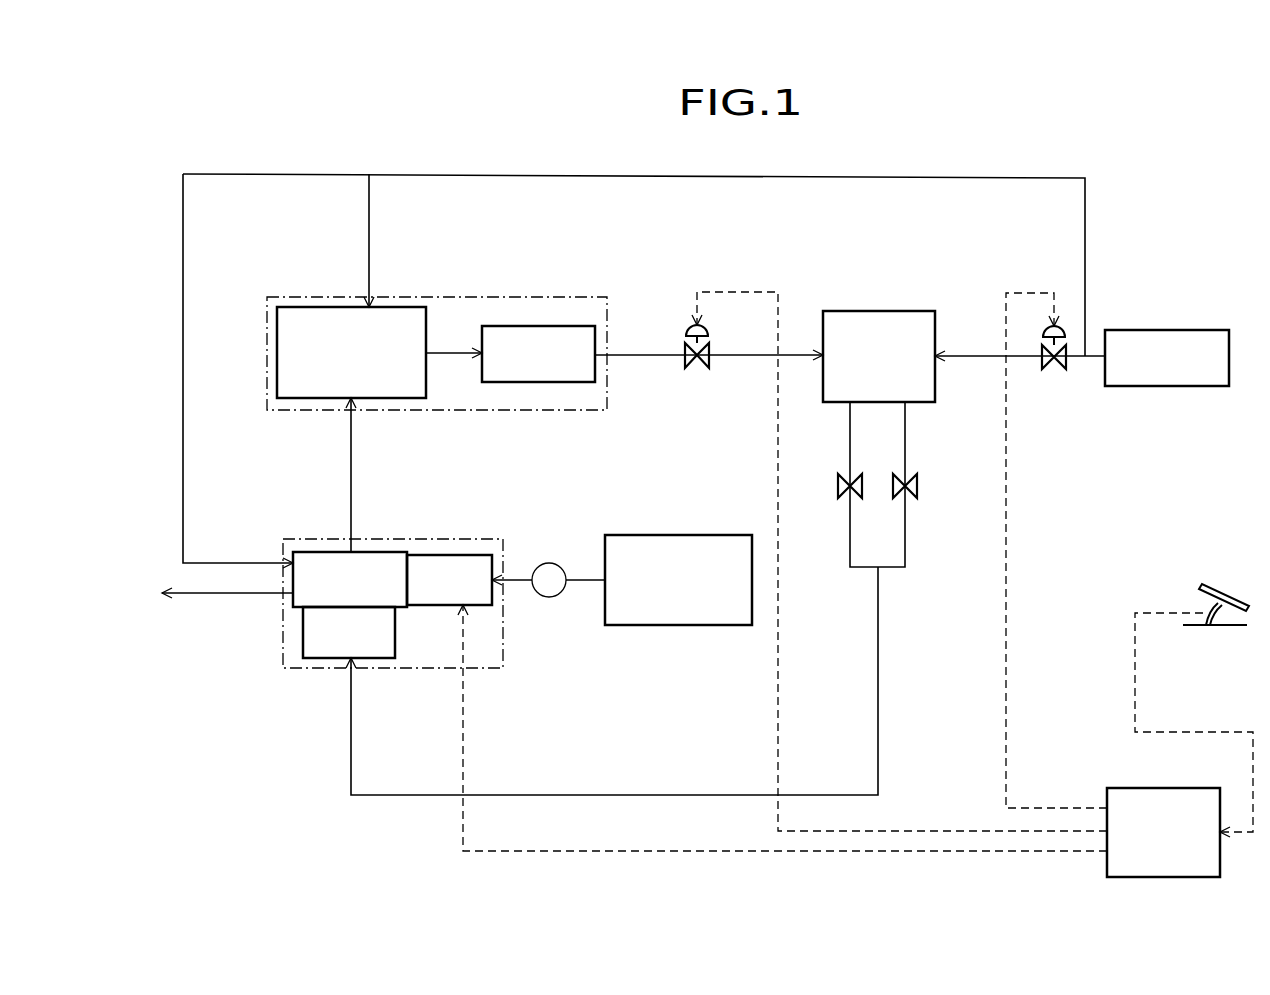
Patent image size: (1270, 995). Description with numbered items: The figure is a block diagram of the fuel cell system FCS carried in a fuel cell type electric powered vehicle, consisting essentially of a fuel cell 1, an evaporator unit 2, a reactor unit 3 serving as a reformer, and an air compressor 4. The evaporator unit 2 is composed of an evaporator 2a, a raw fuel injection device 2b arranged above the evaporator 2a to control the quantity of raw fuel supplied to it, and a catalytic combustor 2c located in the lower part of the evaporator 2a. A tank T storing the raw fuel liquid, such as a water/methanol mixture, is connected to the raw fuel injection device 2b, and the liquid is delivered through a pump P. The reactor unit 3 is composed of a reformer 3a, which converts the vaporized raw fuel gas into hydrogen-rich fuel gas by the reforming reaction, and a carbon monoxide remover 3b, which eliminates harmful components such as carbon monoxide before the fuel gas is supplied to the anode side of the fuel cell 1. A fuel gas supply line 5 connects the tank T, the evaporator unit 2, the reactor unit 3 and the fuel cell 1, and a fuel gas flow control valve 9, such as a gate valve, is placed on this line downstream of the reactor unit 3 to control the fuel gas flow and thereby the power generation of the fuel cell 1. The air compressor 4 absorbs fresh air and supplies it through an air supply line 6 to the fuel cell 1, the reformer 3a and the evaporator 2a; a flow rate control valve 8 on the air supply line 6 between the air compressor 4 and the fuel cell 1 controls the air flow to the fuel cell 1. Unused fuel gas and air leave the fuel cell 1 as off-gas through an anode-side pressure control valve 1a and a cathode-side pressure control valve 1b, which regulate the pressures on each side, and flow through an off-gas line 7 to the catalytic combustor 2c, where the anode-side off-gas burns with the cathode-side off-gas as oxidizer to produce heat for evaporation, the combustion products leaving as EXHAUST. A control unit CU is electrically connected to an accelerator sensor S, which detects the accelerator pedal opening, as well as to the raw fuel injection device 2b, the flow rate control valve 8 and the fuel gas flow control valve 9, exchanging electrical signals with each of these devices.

The fuel cell 1 is at (845, 311).
The anode-side pressure control valve 1a is at (838, 490).
The cathode-side pressure control valve 1b is at (917, 490).
The evaporator unit 2 is at (393, 540).
The evaporator 2a is at (328, 552).
The raw fuel injection device 2b is at (455, 555).
The catalytic combustor 2c is at (338, 660).
The reactor unit 3 is at (465, 296).
The reformer 3a is at (293, 306).
The carbon monoxide remover 3b is at (575, 383).
The air compressor 4 is at (1143, 330).
The fuel gas supply line 5 is at (740, 358).
The air supply line 6 is at (935, 177).
The off-gas line 7 is at (850, 455).
The flow rate control valve 8 is at (1058, 369).
The fuel gas flow control valve 9 is at (690, 366).
The tank T is at (630, 535).
The pump P is at (549, 580).
The accelerator sensor S is at (1227, 597).
The control unit CU is at (1143, 788).
The fuel cell system FCS is at (1160, 252).
The exhaust outlet EXHAUST is at (195, 594).